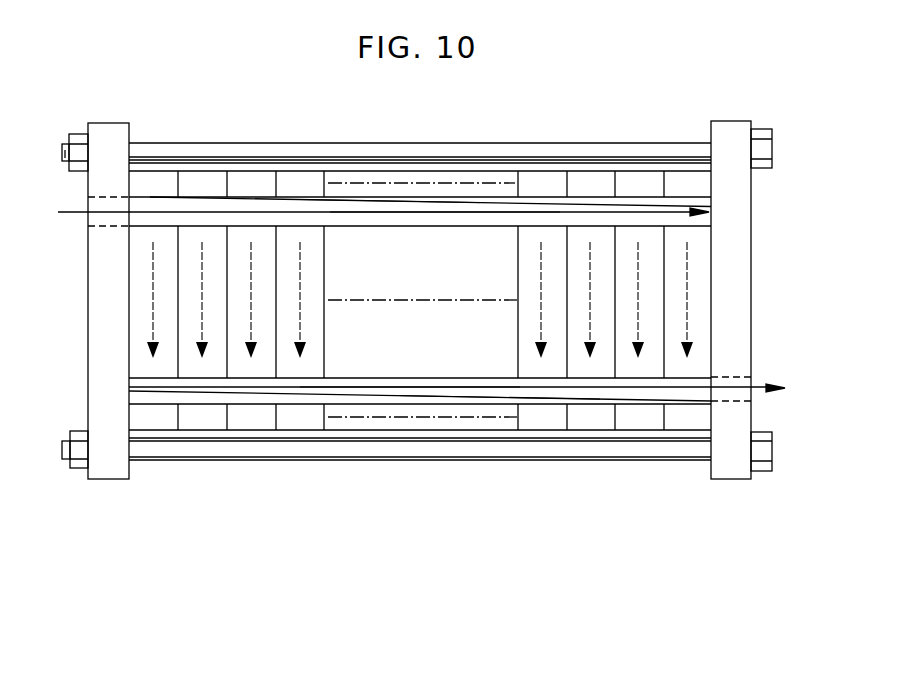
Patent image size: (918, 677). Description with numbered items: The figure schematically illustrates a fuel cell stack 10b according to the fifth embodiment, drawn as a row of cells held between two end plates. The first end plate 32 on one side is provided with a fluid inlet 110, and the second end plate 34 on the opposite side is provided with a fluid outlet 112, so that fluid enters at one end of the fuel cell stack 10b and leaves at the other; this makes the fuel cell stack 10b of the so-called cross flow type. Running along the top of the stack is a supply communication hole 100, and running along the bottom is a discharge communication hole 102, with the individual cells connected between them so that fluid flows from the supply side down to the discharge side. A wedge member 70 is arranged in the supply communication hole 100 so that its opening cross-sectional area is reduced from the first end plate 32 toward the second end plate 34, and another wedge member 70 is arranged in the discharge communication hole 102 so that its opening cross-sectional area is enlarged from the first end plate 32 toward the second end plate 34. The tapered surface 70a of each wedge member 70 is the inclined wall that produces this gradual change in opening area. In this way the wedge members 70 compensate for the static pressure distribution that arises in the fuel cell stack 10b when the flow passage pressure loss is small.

The fuel cell stack 10b is at (636, 80).
The first end plate 32 is at (107, 122).
The second end plate 34 is at (735, 120).
The wedge member 70 is at (298, 200).
The tube wall 70a is at (368, 203).
The supply communication hole 100 is at (443, 214).
The discharge communication hole 102 is at (363, 384).
The fluid inlet 110 is at (100, 226).
The fluid outlet 112 is at (751, 374).